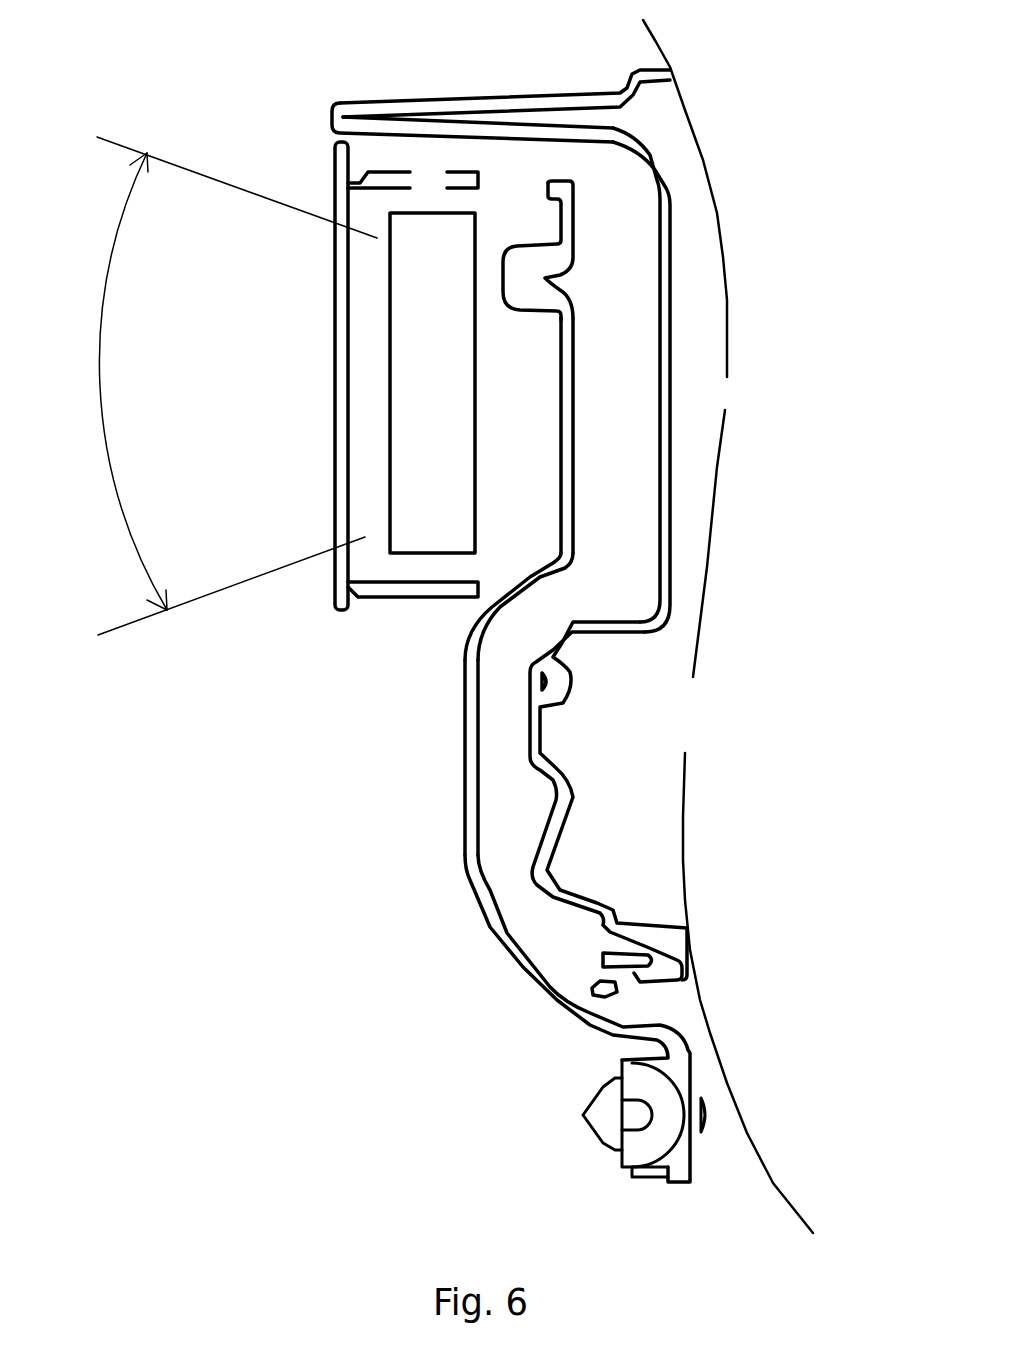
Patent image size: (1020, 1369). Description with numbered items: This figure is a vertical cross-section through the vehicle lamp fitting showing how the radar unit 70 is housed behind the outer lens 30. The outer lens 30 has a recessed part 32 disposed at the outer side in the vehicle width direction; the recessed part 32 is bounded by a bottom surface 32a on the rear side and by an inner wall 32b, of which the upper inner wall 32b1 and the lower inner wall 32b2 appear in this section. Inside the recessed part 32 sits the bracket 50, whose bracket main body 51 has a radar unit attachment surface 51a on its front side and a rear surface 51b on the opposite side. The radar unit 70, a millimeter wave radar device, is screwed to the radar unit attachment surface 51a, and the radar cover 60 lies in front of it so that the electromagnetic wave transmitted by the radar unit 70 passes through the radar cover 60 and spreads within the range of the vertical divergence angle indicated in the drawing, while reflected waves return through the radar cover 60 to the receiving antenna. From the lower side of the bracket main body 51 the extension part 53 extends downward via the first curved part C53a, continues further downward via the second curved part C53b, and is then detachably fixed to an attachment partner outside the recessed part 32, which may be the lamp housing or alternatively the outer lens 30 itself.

The outer lens 30 is at (580, 93).
The recessed part 32 is at (520, 502).
The bottom surface 32a is at (672, 410).
The inner wall 32b is at (496, 502).
The upper inner wall 32b1 is at (378, 153).
The lower inner wall 32b2 is at (603, 628).
The bracket 50 is at (576, 347).
The bracket main body 51 is at (568, 435).
The radar unit attachment surface 51a is at (558, 468).
The rear surface 51b is at (577, 513).
The extension part 53 is at (555, 851).
The first curved part C53a is at (523, 578).
The second curved part C53b is at (561, 1018).
The radar cover 60 is at (335, 353).
The radar unit 70 is at (432, 213).